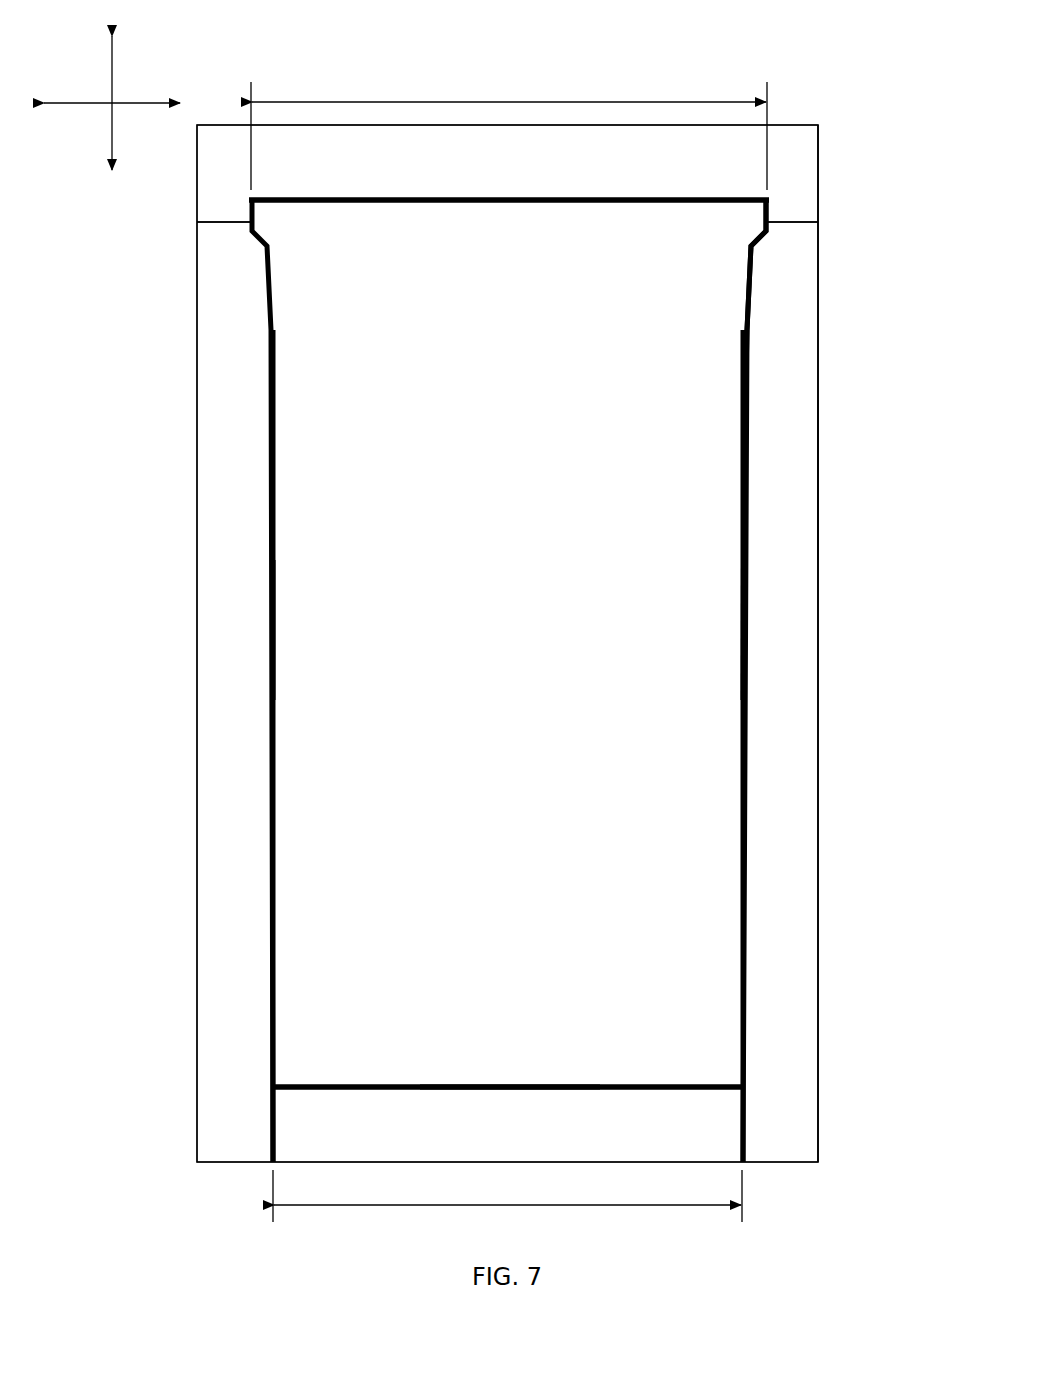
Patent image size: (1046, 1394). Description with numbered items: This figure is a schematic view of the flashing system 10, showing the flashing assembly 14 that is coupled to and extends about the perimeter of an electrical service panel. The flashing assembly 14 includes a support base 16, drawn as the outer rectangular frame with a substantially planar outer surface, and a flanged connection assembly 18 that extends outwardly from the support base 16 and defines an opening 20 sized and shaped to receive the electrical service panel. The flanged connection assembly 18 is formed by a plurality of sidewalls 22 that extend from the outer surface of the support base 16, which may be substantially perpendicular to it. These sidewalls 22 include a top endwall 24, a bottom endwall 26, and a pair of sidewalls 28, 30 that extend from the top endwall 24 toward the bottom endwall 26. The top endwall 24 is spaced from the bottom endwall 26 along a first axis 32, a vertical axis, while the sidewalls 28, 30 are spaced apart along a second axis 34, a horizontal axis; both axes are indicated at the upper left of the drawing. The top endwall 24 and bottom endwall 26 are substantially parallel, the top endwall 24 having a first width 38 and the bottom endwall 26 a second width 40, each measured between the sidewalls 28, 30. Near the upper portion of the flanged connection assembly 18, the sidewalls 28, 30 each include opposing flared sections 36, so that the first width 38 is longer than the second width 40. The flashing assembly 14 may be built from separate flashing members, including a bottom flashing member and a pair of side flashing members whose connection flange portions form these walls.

The flashing system 10 is at (140, 450).
The flashing assembly 14 is at (848, 95).
The support base 16 is at (818, 378).
The flanged connection assembly 18 is at (740, 380).
The opening 20 is at (713, 846).
The sidewalls 22 is at (763, 585).
The top endwall 24 is at (508, 200).
The bottom endwall 26 is at (420, 1085).
The sidewall 28 is at (275, 508).
The sidewall 30 is at (740, 508).
The first axis 32 is at (112, 124).
The second axis 34 is at (134, 103).
The flared sections 36 is at (238, 245).
The first width 38 is at (523, 102).
The second width 40 is at (447, 1207).